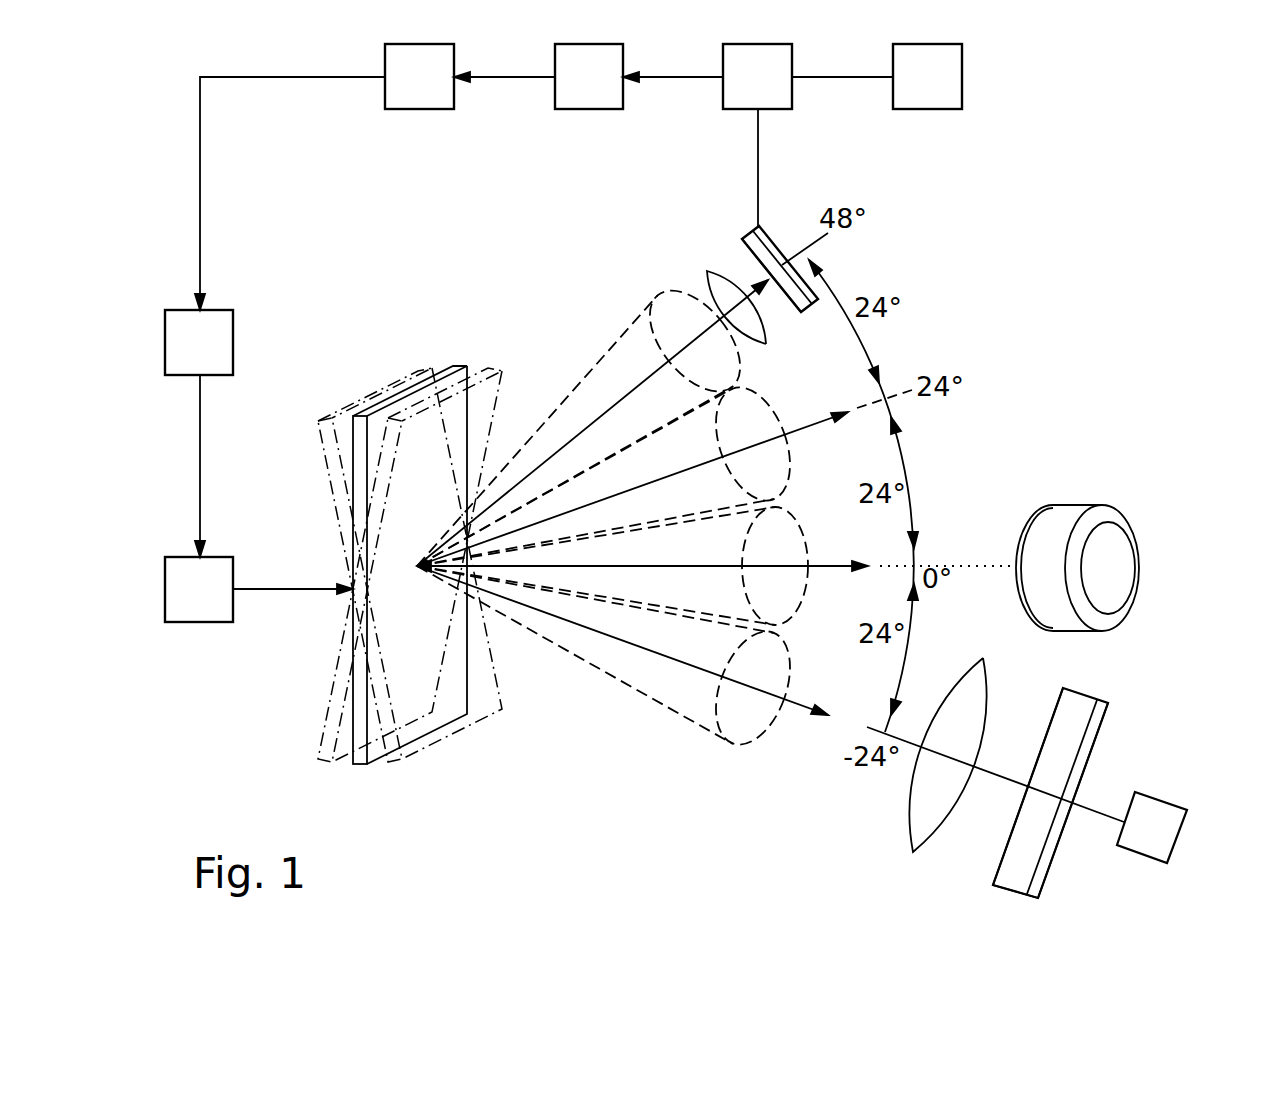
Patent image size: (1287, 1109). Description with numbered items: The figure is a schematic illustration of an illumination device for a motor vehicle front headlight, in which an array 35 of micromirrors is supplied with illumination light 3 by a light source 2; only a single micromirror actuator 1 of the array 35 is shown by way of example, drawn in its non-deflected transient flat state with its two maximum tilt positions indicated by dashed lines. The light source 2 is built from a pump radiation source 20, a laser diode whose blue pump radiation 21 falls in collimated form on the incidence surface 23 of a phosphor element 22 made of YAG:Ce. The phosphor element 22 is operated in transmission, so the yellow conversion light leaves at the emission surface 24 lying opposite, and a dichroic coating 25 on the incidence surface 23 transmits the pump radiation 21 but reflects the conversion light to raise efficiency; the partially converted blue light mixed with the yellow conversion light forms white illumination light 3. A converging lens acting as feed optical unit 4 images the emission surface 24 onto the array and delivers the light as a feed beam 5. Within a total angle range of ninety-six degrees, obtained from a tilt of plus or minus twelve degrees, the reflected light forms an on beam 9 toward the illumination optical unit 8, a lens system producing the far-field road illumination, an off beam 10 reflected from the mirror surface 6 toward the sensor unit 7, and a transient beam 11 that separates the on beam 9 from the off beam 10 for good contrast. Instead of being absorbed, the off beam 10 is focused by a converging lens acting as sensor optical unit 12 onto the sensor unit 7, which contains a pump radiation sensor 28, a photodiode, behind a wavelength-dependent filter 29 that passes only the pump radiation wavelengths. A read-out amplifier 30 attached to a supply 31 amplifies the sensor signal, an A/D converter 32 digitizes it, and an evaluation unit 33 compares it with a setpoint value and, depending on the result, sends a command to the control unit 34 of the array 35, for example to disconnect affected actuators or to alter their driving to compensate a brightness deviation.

The micromirror actuator 1 is at (380, 425).
The light source 2 is at (1091, 805).
The illumination light 3 is at (1010, 780).
The feed optical unit 4 is at (965, 720).
The feed beam 5 is at (677, 683).
The mirror surface 6 is at (457, 680).
The sensor unit 7 is at (751, 233).
The illumination optical unit 8 is at (1043, 538).
The on beam 9 is at (657, 582).
The off beam 10 is at (585, 410).
The transient beam 11 is at (680, 469).
The sensor optical unit 12 is at (702, 270).
The pump radiation source 20 is at (1153, 827).
The pump radiation 21 is at (1083, 808).
The phosphor element 22 is at (1068, 735).
The incidence surface 23 is at (1115, 771).
The emission surface 24 is at (1028, 764).
The dichroic coating 25 is at (990, 885).
The pump radiation sensor 28 is at (769, 252).
The wavelength-dependent filter 29 is at (759, 260).
The read-out amplifier 30 is at (775, 91).
The supply 31 is at (945, 91).
The A/D converter 32 is at (606, 91).
The evaluation unit 33 is at (437, 91).
The control unit 34 is at (216, 357).
The micromirror array 35 is at (216, 604).